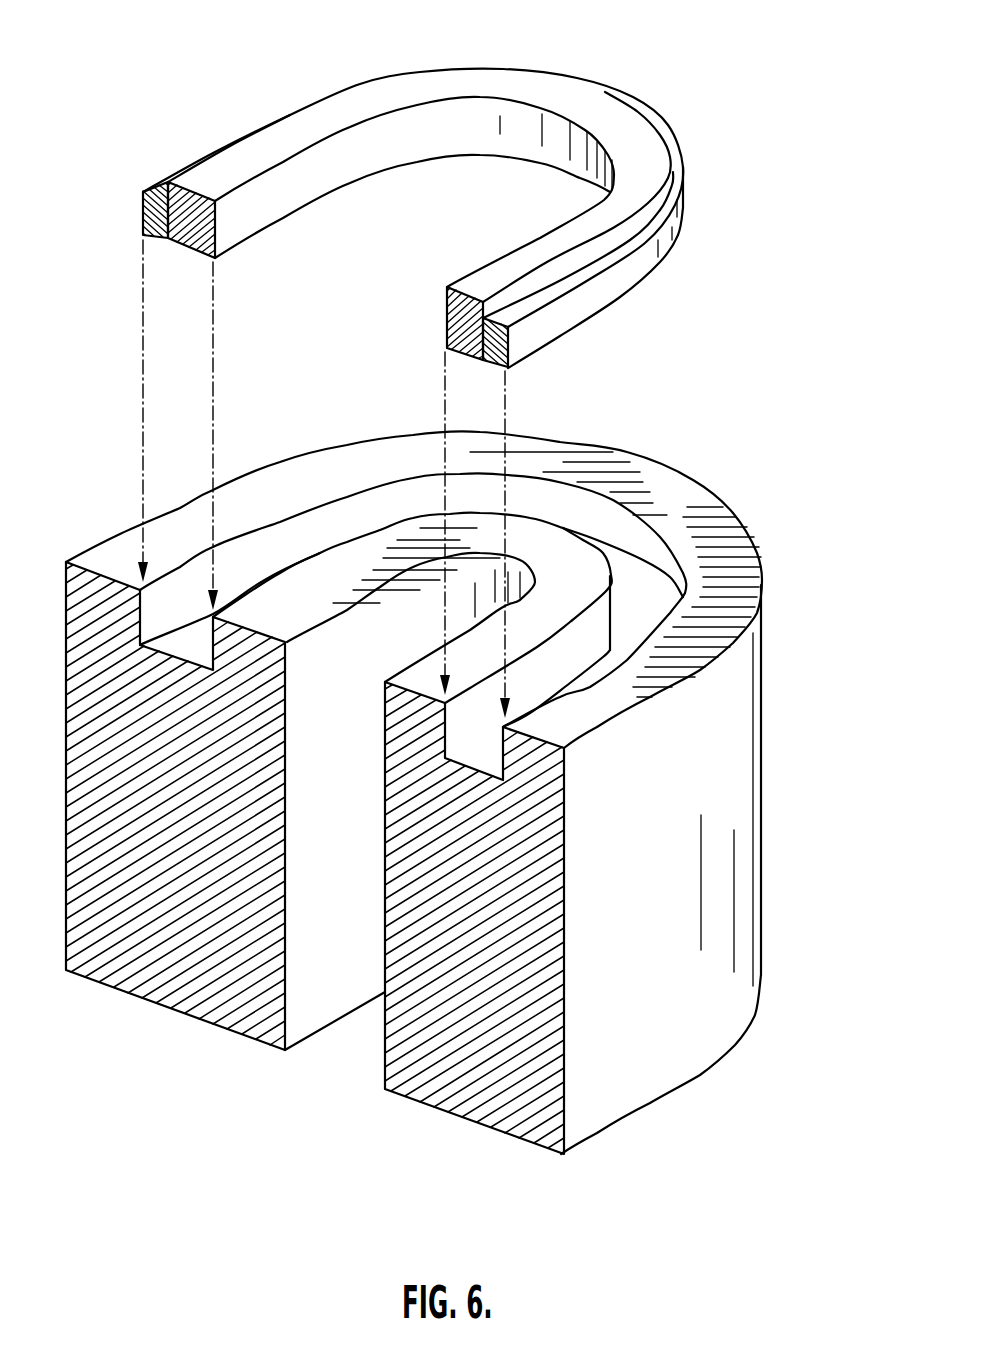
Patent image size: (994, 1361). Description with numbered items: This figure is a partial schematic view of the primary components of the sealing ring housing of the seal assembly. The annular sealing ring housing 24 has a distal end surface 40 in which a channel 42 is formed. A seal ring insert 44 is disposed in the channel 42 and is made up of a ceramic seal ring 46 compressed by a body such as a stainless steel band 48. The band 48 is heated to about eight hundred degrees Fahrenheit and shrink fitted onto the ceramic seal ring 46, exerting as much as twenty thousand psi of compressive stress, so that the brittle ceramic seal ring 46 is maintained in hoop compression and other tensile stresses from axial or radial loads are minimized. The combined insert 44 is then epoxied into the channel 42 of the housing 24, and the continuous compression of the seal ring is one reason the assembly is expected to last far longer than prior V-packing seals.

The sealing ring housing 24 is at (458, 766).
The distal end surface 40 is at (720, 542).
The channel 42 is at (618, 562).
The seal ring insert 44 is at (426, 192).
The ceramic seal ring 46 is at (227, 218).
The stainless steel band 48 is at (175, 172).